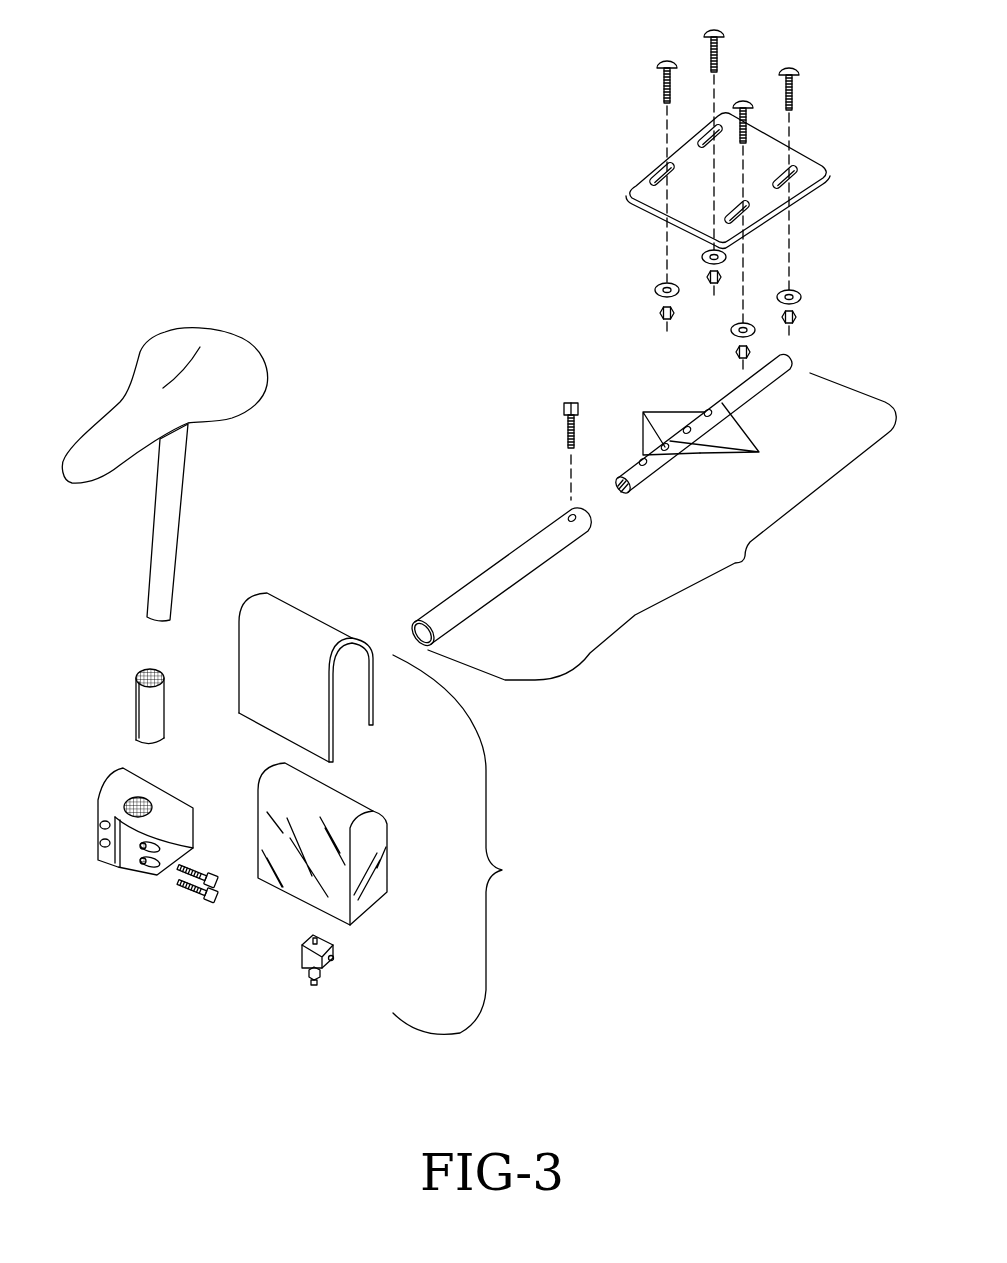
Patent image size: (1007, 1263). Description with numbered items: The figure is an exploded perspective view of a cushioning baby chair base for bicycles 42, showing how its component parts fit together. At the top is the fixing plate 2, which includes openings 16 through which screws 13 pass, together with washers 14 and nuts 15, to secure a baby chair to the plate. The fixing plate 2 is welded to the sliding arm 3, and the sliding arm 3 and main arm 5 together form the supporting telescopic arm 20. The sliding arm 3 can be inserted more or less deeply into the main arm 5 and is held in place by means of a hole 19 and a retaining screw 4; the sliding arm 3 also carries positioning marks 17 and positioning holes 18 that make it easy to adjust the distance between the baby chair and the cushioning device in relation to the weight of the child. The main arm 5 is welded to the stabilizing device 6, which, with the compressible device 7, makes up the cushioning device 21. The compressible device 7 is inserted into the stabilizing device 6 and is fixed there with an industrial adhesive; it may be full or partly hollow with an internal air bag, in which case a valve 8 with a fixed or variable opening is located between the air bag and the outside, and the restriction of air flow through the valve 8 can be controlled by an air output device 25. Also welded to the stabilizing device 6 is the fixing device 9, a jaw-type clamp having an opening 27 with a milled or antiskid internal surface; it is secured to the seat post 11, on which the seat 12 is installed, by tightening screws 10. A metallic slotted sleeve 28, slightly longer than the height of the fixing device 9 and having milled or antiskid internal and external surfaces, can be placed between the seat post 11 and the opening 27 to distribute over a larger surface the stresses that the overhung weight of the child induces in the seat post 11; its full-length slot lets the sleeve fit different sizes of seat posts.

The fixing plate 2 is at (798, 187).
The sliding arm 3 is at (643, 482).
The retaining screw 4 is at (562, 420).
The main arm 5 is at (453, 625).
The stabilizing device 6 is at (334, 705).
The compressible device 7 is at (387, 872).
The valve 8 is at (335, 957).
The fixing device 9 is at (118, 778).
The tightening screws 10 is at (193, 898).
The seat post 11 is at (157, 558).
The seat 12 is at (247, 388).
The screws 13 is at (798, 73).
The washers 14 is at (800, 297).
The nuts 15 is at (796, 317).
The openings 16 is at (652, 180).
The positioning marks 17 is at (730, 436).
The positioning holes 18 is at (660, 420).
The hole 19 is at (576, 519).
The supporting telescopic arm 20 is at (662, 526).
The cushioning device 21 is at (467, 844).
The air output device 25 is at (320, 976).
The opening 27 is at (150, 797).
The metallic slotted sleeve 28 is at (157, 705).
The cushioning baby chair base for bicycles 42 is at (362, 214).